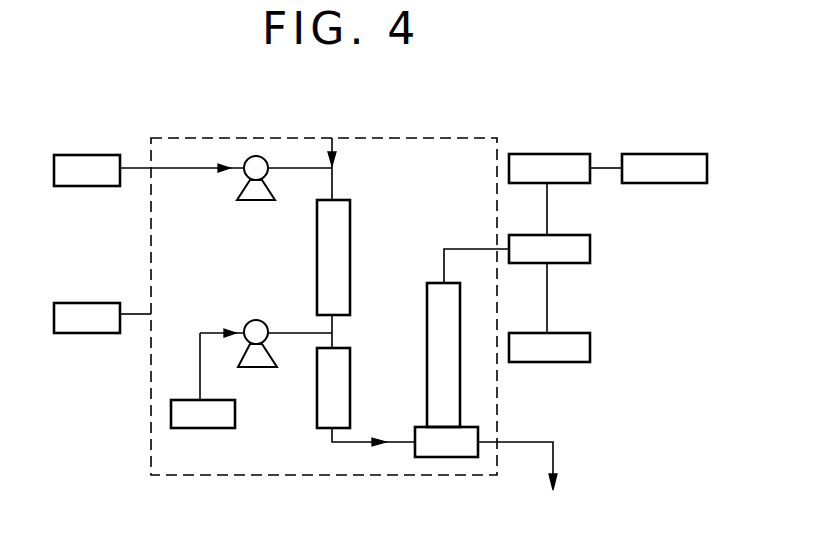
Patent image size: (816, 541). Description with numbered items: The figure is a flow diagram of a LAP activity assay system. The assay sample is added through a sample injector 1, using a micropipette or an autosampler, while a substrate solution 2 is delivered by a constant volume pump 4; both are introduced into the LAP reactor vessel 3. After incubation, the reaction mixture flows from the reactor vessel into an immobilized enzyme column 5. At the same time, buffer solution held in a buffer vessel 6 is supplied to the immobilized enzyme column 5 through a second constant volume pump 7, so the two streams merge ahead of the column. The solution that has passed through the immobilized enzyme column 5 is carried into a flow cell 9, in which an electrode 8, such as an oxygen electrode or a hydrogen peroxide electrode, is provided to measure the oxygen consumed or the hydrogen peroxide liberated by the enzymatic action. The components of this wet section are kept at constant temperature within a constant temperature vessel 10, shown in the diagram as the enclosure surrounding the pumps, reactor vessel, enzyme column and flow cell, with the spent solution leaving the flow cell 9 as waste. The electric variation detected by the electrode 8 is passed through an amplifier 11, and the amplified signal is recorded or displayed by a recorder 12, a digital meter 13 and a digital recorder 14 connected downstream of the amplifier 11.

The sample injector 1 is at (334, 153).
The substrate solution 2 is at (97, 155).
The LAP reactor vessel 3 is at (350, 248).
The constant volume pump 4 is at (238, 195).
The immobilized enzyme column 5 is at (350, 402).
The buffer vessel 6 is at (235, 416).
The constant volume pump 7 is at (262, 368).
The electrode 8 is at (427, 333).
The flow cell 9 is at (457, 457).
The constant temperature vessel 10 is at (88, 333).
The amplifier 11 is at (590, 250).
The recorder 12 is at (590, 352).
The digital meter 13 is at (558, 154).
The digital recorder 14 is at (668, 154).